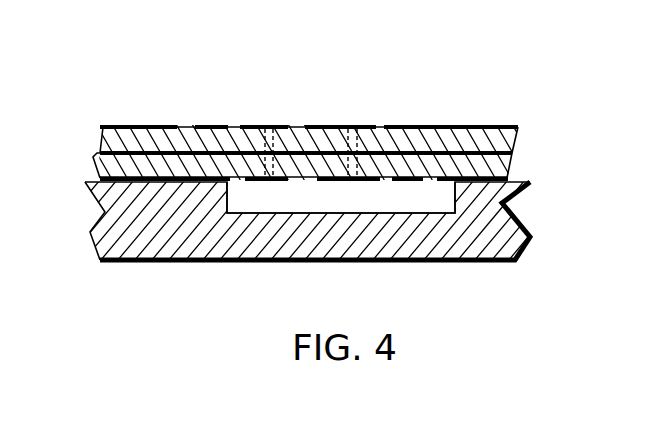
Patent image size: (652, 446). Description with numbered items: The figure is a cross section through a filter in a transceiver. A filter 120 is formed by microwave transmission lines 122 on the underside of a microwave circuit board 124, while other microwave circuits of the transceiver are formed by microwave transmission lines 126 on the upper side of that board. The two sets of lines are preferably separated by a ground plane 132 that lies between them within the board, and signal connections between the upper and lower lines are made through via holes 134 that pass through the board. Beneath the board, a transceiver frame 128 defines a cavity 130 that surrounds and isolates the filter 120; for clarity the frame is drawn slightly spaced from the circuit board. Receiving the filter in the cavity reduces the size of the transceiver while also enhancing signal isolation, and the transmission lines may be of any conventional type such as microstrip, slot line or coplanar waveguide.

The filter 120 is at (259, 191).
The microwave transmission lines 122 is at (292, 181).
The microwave circuit board 124 is at (516, 149).
The microwave transmission lines 126 is at (326, 127).
The transceiver frame 128 is at (527, 199).
The cavity 130 is at (455, 196).
The ground plane 132 is at (401, 128).
The via holes 134 is at (264, 143).